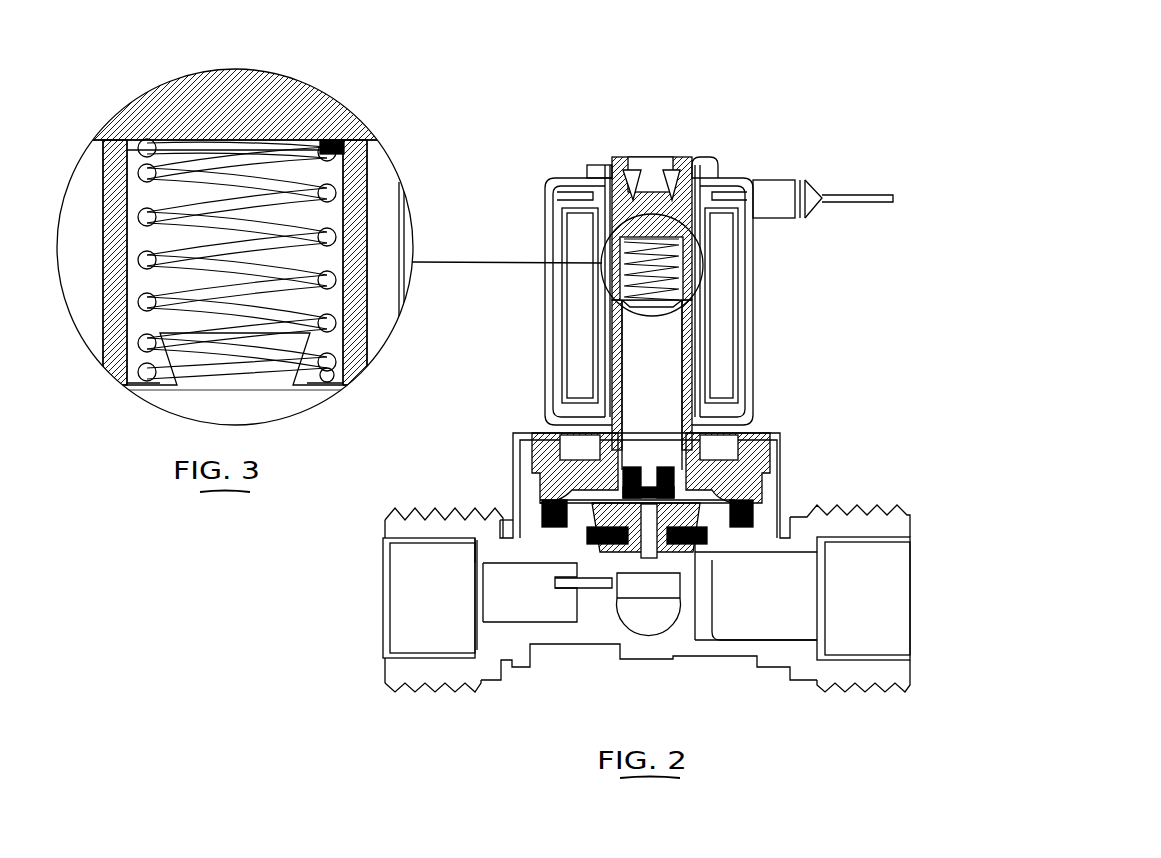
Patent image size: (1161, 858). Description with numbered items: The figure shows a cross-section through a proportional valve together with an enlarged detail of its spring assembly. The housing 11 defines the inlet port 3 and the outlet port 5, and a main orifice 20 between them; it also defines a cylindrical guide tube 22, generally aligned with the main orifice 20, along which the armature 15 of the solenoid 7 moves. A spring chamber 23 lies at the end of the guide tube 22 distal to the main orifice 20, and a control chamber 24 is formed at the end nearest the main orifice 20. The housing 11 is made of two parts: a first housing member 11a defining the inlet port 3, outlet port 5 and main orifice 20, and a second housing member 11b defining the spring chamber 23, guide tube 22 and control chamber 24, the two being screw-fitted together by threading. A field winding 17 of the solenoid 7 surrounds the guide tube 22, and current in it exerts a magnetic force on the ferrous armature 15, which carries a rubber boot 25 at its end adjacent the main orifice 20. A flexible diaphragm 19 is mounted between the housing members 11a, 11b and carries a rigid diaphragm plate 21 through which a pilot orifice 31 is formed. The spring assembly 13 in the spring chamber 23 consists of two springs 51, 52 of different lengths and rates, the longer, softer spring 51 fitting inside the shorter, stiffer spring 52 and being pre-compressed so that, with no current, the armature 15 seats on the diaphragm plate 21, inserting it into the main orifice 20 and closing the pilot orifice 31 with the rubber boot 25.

In FIG. 2, the inlet port 3 is at (870, 580).
In FIG. 2, the outlet port 5 is at (405, 578).
In FIG. 2, the solenoid 7 is at (750, 324).
In FIG. 2, the housing 11 is at (603, 660).
In FIG. 2, the first housing member 11a is at (523, 450).
In FIG. 2, the second housing member 11b is at (758, 468).
In FIG. 3, the spring assembly 13 is at (307, 200).
In FIG. 2, the spring assembly 13 is at (703, 261).
In FIG. 3, the armature 15 is at (263, 373).
In FIG. 2, the armature 15 is at (658, 417).
In FIG. 2, the field winding 17 is at (577, 358).
In FIG. 2, the flexible diaphragm 19 is at (585, 512).
In FIG. 2, the main orifice 20 is at (680, 587).
In FIG. 2, the diaphragm plate 21 is at (605, 545).
In FIG. 3, the guide tube 22 is at (314, 200).
In FIG. 2, the guide tube 22 is at (686, 363).
In FIG. 3, the spring chamber 23 is at (360, 276).
In FIG. 2, the spring chamber 23 is at (690, 292).
In FIG. 2, the control chamber 24 is at (718, 491).
In FIG. 2, the rubber boot 25 is at (550, 478).
In FIG. 2, the pilot orifice 31 is at (640, 562).
In FIG. 3, the longer spring 51 is at (348, 142).
In FIG. 3, the shorter spring 52 is at (352, 183).